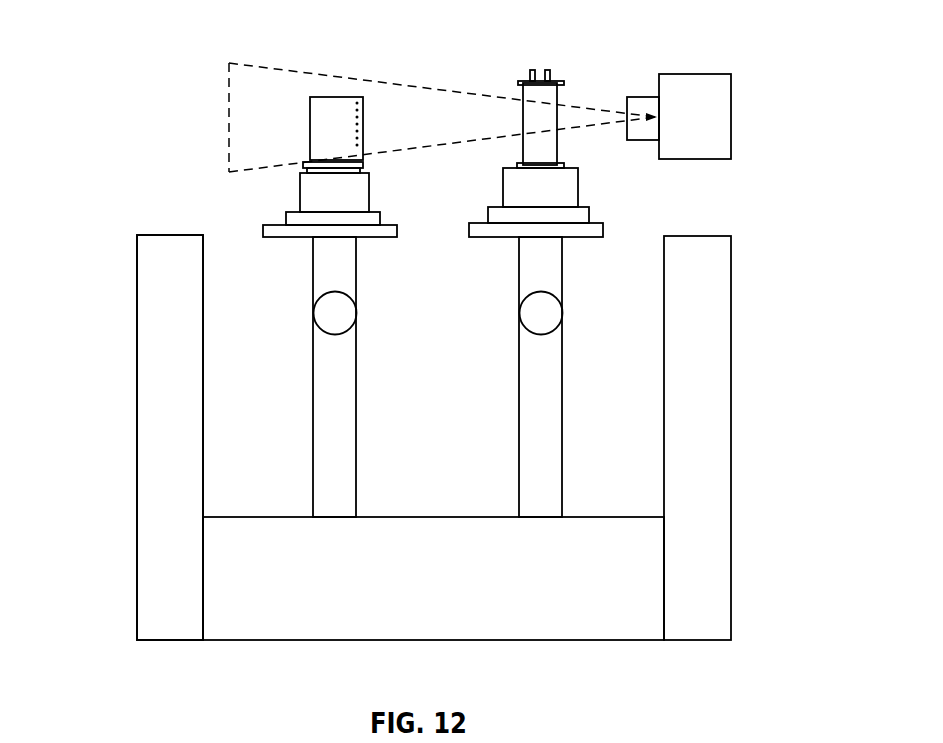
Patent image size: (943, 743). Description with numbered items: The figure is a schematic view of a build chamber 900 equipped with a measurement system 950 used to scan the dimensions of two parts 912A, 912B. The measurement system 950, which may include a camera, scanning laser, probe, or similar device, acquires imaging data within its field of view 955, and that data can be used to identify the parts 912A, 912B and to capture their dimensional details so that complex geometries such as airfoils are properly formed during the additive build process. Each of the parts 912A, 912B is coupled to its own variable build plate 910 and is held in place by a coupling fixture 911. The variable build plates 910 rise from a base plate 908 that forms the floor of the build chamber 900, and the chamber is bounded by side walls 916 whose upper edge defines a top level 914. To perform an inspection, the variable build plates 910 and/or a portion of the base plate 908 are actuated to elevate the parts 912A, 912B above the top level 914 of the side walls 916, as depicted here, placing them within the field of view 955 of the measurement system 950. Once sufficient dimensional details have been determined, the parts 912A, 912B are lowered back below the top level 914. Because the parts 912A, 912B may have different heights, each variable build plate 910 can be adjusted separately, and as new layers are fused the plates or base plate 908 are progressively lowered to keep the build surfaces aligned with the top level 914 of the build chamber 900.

The build chamber 900 is at (125, 32).
The base plate 908 is at (310, 642).
The variable build plate 910 is at (313, 430).
The coupling fixture 911 is at (276, 218).
The part 912A is at (310, 143).
The part 912B is at (523, 90).
The top level 914 is at (163, 233).
The side walls 916 is at (137, 558).
The measurement system 950 is at (693, 74).
The field of view 955 is at (229, 132).